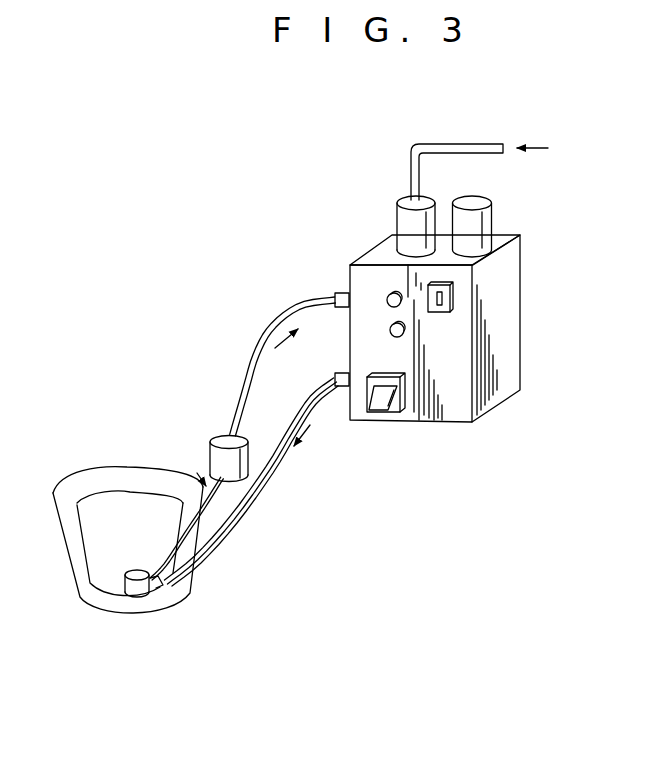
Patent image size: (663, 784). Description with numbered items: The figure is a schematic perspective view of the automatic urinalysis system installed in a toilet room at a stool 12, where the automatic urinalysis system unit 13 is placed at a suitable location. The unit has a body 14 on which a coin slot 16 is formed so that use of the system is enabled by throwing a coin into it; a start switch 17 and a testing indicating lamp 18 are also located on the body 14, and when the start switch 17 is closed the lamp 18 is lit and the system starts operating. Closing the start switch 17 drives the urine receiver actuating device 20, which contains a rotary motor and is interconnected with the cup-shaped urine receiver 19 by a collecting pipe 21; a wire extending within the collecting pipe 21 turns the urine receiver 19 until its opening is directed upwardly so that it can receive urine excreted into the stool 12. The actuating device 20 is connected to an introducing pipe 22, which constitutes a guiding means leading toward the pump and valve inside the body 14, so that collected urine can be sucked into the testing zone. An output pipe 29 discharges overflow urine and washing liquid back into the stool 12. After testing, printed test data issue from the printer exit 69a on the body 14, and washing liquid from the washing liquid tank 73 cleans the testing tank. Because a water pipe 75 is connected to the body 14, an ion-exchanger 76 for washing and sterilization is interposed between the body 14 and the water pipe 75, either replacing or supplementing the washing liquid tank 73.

The stool 12 is at (178, 600).
The automatic urinalysis system unit 13 is at (350, 256).
The body 14 is at (517, 260).
The coin slot 16 is at (442, 298).
The start switch 17 is at (387, 296).
The testing indicating lamp 18 is at (390, 331).
The urine receiver 19 is at (135, 593).
The urine receiver actuating device 20 is at (212, 453).
The collecting pipe 21 is at (210, 520).
The introducing pipe 22 is at (262, 338).
The output pipe 29 is at (205, 550).
The printer exit 69a is at (397, 395).
The washing liquid tank 73 is at (492, 215).
The water pipe 75 is at (468, 143).
The ion-exchanger 76 is at (398, 216).